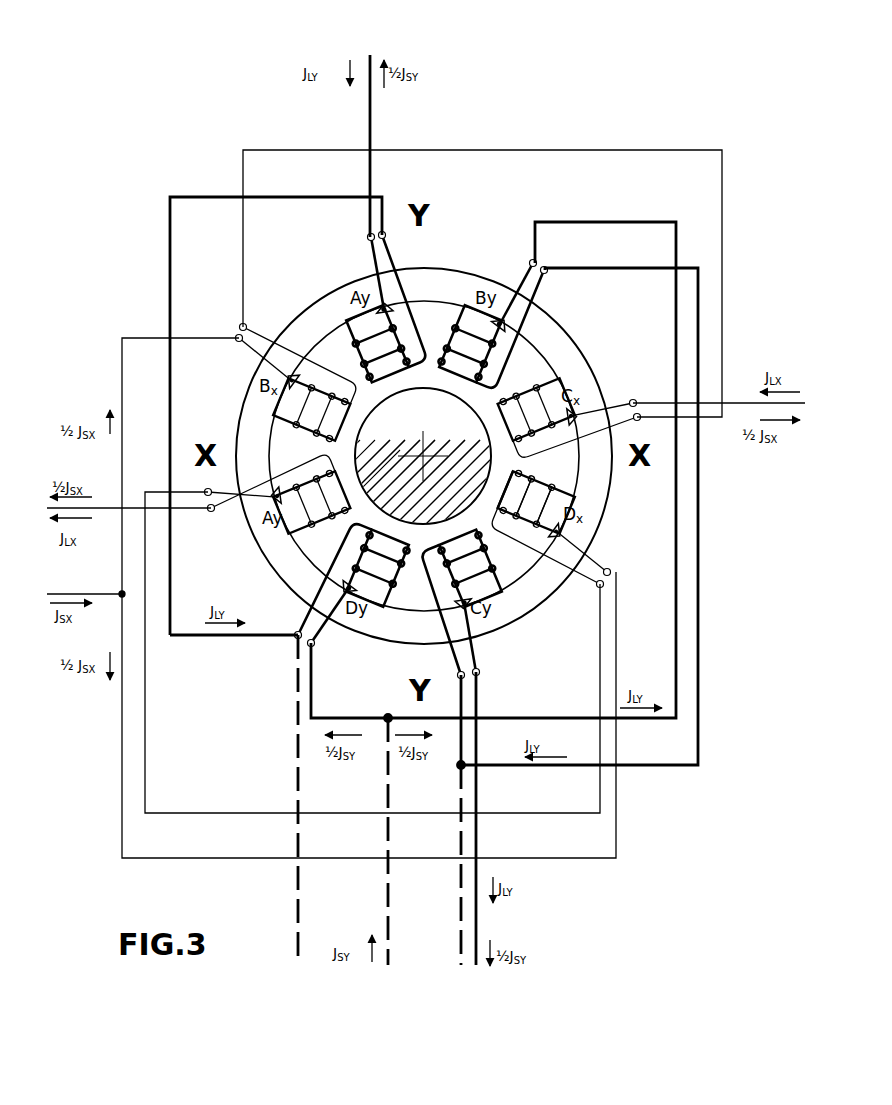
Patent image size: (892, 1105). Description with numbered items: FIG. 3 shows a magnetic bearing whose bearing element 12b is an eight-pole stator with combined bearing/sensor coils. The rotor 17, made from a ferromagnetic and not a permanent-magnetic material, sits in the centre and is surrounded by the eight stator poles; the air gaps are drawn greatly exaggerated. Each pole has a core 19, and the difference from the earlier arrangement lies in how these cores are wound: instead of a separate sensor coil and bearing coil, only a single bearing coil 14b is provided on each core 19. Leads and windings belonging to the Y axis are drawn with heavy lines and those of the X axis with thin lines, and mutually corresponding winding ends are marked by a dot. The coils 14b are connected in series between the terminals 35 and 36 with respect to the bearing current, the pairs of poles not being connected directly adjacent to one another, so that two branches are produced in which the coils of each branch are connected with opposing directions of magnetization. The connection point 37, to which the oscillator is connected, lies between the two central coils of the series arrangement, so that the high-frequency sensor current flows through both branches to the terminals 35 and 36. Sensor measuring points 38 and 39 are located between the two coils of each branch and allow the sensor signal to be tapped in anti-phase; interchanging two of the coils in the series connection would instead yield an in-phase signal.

The terminal 35 is at (373, 56).
The bearing element 12b is at (479, 263).
The rotor 17 is at (428, 512).
The core 19 is at (508, 474).
The bearing coil 14b is at (555, 481).
The terminal 36 is at (478, 920).
The connection point 37 is at (390, 893).
The sensor measuring point 38 is at (270, 800).
The sensor measuring point 39 is at (459, 937).